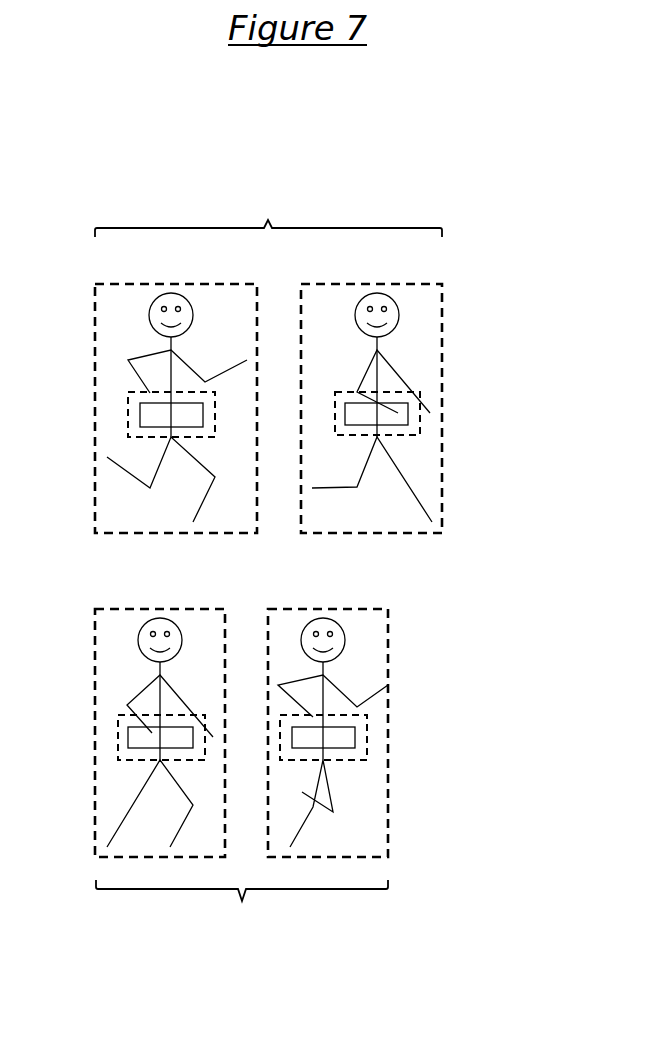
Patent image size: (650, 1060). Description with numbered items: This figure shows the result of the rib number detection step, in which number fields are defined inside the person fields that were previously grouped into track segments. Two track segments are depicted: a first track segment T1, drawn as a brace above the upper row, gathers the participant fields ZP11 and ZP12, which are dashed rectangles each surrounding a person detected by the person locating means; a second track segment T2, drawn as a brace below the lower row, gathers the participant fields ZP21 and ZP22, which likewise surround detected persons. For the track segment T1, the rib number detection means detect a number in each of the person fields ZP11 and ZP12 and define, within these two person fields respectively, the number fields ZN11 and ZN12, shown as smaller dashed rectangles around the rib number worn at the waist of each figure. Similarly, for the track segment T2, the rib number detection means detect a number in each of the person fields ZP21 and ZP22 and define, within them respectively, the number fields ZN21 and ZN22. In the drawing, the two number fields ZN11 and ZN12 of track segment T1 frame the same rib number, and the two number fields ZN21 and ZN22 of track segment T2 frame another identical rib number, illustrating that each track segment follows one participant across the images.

The first track segment T1 is at (268, 216).
The second track segment T2 is at (242, 908).
The participant field ZP11 is at (144, 390).
The participant field ZP12 is at (401, 390).
The participant field ZP21 is at (128, 714).
The participant field ZP22 is at (357, 714).
The number field ZN11 is at (130, 411).
The number field ZN12 is at (422, 427).
The number field ZN21 is at (118, 740).
The number field ZN22 is at (367, 733).